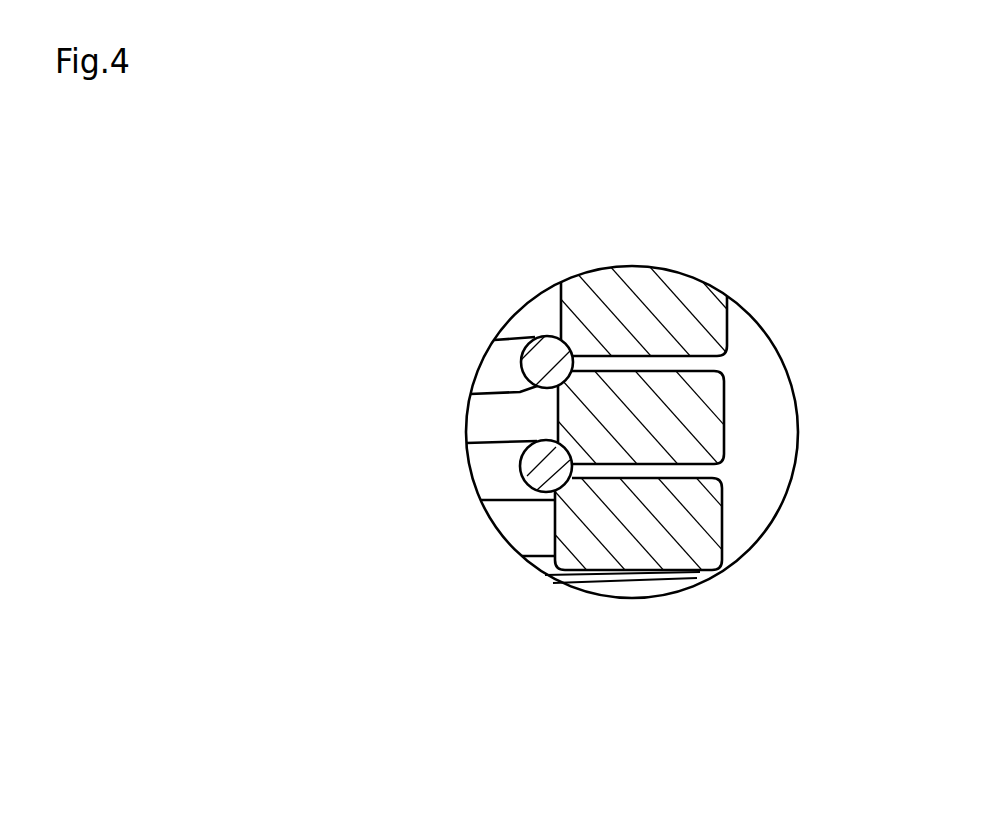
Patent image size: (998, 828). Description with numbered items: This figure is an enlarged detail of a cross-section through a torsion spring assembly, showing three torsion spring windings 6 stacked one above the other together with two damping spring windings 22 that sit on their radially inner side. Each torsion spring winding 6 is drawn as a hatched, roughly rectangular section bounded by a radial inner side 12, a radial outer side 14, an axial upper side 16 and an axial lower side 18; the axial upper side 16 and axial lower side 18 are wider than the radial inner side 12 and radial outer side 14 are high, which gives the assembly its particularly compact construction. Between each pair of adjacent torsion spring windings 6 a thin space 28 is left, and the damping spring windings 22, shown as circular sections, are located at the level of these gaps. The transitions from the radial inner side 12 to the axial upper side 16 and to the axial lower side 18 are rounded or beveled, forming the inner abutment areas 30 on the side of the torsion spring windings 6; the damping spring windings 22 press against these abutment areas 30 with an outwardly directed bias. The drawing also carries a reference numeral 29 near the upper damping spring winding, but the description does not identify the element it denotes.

The torsion spring windings 6 is at (683, 316).
The radial inner side 12 is at (525, 525).
The radial outer side 14 is at (723, 525).
The axial upper side 16 is at (633, 478).
The axial lower side 18 is at (641, 568).
The damping spring windings 22 is at (545, 362).
The space 28 is at (703, 365).
The upper raceway 29 is at (565, 336).
The inner abutment areas 30 is at (540, 388).